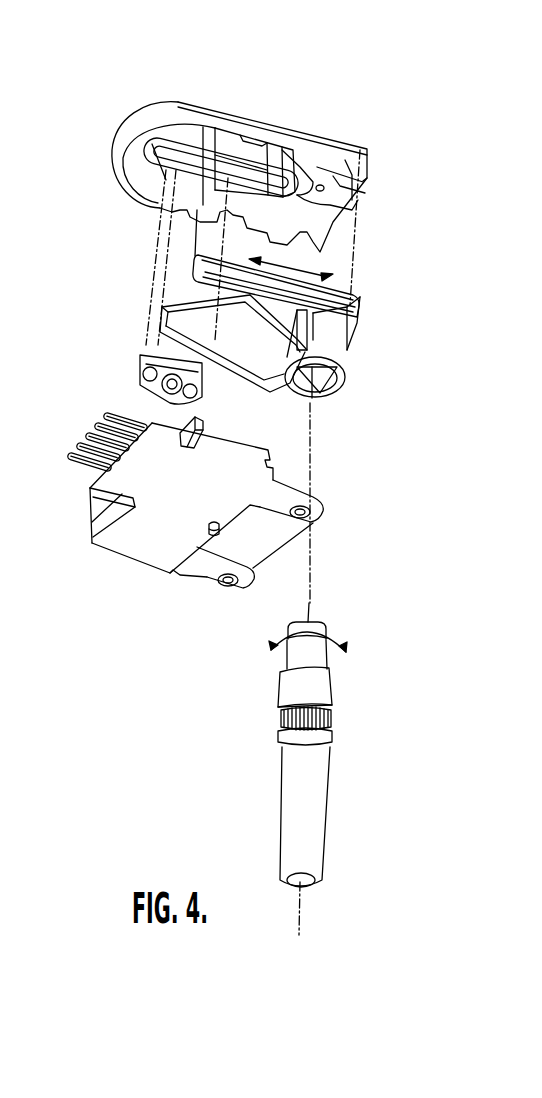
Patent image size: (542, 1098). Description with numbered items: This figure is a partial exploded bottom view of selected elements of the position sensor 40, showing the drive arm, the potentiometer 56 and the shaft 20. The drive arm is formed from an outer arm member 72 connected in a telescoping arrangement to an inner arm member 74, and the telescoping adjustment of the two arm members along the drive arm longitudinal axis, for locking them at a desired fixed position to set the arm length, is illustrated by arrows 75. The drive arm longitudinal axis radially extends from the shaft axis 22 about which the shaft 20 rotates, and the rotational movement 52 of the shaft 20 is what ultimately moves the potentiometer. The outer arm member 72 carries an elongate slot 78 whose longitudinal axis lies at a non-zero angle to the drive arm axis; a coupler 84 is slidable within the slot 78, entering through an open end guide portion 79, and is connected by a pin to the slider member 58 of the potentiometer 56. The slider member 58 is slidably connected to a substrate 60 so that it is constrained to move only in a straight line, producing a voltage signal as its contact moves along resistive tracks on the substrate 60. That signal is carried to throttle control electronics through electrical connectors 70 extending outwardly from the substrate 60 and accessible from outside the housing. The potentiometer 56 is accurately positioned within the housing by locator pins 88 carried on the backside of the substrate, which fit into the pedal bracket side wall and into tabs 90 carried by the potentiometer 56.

The position sensor 40 is at (230, 74).
The outer arm member 72 is at (263, 108).
The open end guide portion 79 is at (307, 195).
The slot 78 is at (185, 156).
The telescoping adjustment arrows 75 is at (298, 267).
The inner arm member 74 is at (357, 287).
The coupler 84 is at (147, 364).
The electrical connectors 70 is at (106, 414).
The slider member 58 is at (98, 498).
The substrate 60 is at (123, 533).
The potentiometer 56 is at (123, 562).
The locator pins 88 is at (210, 532).
The tabs 90 is at (266, 572).
The shaft axis 22 is at (311, 603).
The rotational movement of the shaft 52 is at (333, 641).
The shaft 20 is at (300, 768).